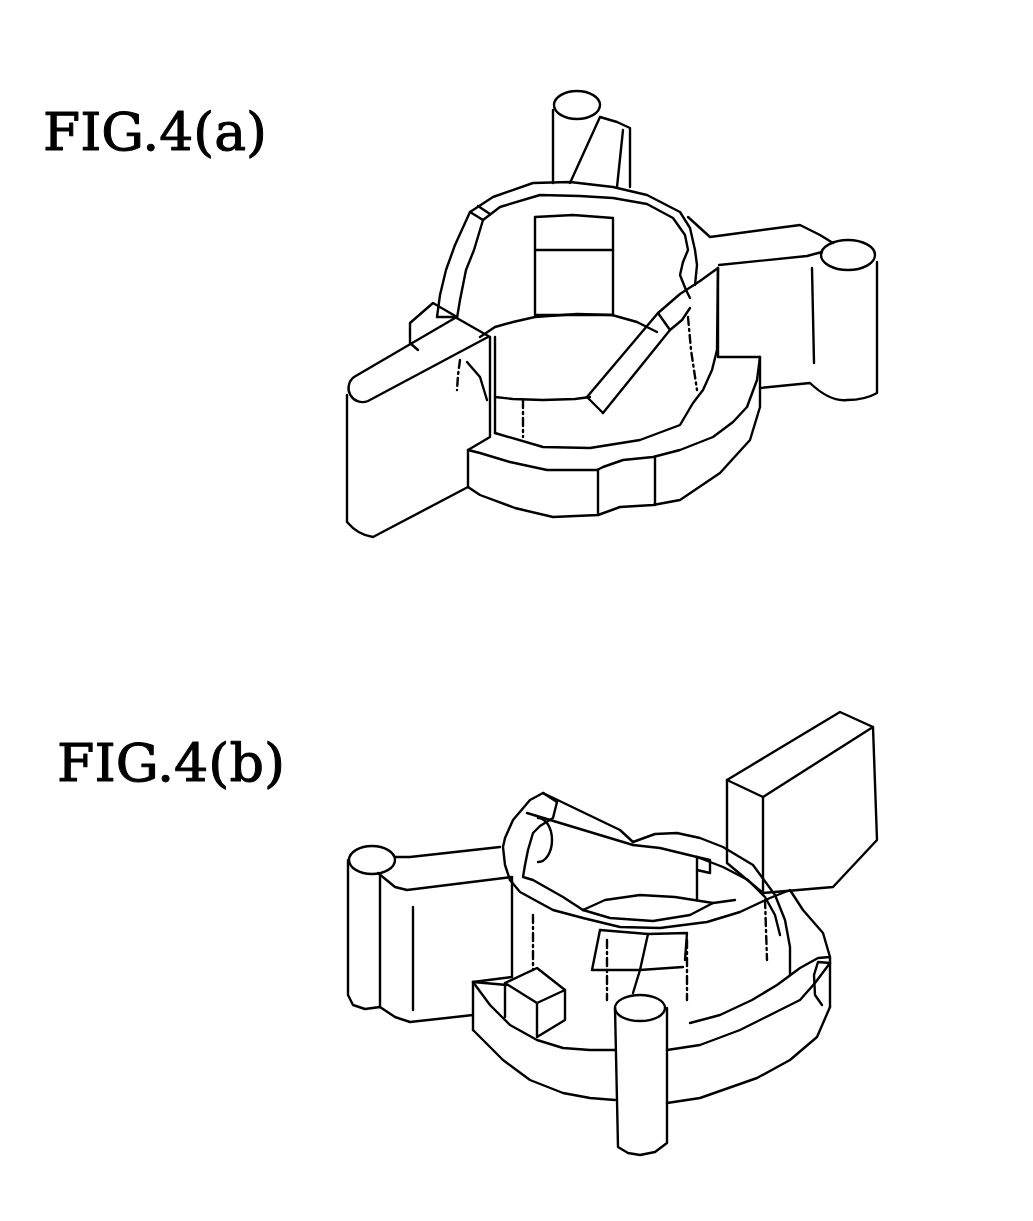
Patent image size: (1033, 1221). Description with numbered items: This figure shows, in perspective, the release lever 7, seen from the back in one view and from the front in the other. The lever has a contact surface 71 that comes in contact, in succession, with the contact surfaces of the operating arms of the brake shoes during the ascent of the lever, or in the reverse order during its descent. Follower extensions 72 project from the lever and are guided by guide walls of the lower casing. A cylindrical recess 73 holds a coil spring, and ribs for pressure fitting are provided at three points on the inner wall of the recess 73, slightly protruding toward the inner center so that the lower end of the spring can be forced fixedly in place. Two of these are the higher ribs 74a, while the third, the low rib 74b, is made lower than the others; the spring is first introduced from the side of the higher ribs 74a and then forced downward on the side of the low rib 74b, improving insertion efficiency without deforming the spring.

In FIG. 4A, the release lever 7 is at (425, 143).
In FIG. 4A, the contact surface 71 is at (537, 507).
In FIG. 4A, the follower extensions 72 is at (613, 130).
In FIG. 4A, the cylindrical recess 73 is at (597, 337).
In FIG. 4A, the higher ribs 74a is at (550, 278).
In FIG. 4B, the higher ribs 74a is at (520, 813).
In FIG. 4B, the low rib 74b is at (713, 857).